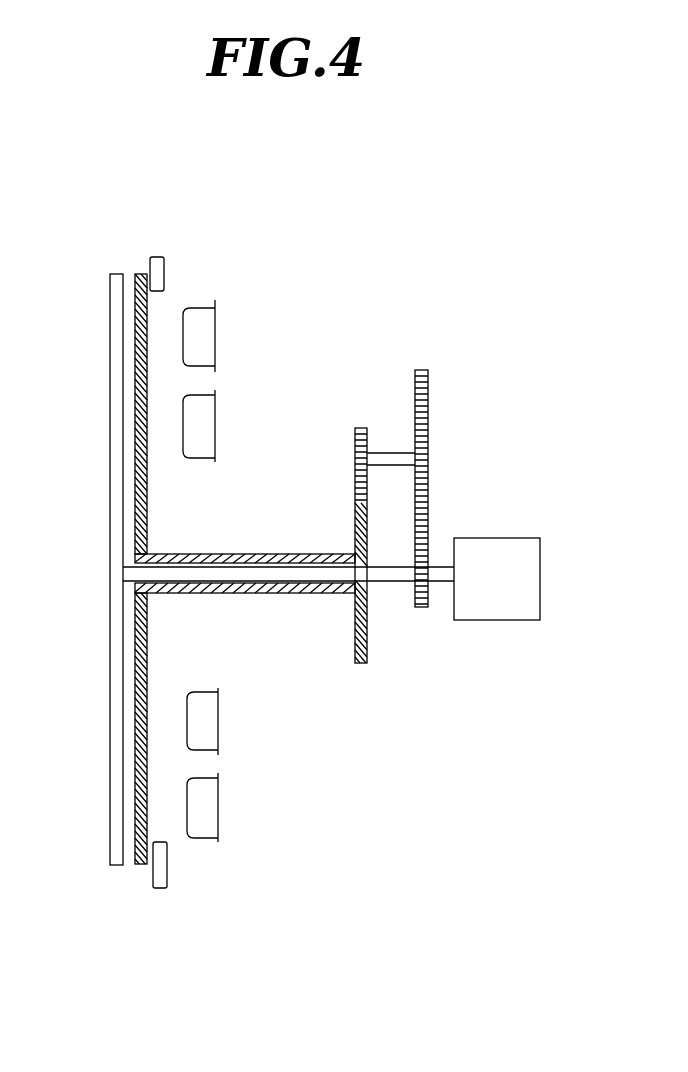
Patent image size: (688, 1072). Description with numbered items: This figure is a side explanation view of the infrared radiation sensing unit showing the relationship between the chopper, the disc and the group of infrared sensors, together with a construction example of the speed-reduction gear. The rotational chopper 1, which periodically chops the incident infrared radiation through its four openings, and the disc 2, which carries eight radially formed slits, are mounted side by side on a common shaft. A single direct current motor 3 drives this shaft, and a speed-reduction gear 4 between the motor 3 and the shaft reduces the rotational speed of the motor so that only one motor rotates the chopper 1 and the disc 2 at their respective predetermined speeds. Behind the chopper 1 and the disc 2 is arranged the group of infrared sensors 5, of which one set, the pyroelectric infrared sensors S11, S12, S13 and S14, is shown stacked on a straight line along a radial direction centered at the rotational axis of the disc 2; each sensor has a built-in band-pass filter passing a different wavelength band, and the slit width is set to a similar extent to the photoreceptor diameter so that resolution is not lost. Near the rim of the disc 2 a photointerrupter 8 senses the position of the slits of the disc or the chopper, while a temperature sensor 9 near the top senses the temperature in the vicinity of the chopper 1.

The rotational chopper 1 is at (112, 851).
The disc 2 is at (142, 869).
The motor 3 is at (515, 538).
The speed-reduction gear 4 is at (380, 366).
The group of infrared sensors 5 is at (248, 297).
The photointerrupter 8 is at (160, 890).
The temperature sensor 9 is at (158, 255).
The infrared sensor S11 is at (207, 343).
The infrared sensor S12 is at (208, 424).
The infrared sensor S13 is at (210, 726).
The infrared sensor S14 is at (210, 806).